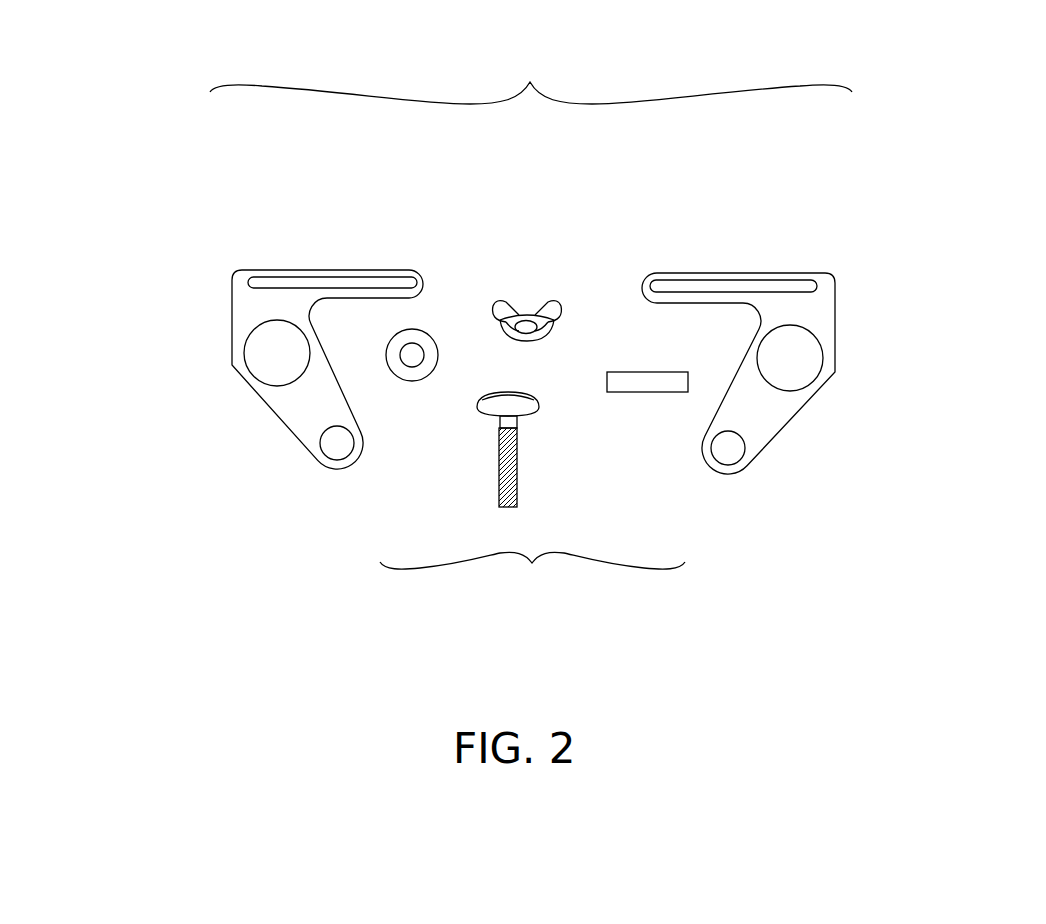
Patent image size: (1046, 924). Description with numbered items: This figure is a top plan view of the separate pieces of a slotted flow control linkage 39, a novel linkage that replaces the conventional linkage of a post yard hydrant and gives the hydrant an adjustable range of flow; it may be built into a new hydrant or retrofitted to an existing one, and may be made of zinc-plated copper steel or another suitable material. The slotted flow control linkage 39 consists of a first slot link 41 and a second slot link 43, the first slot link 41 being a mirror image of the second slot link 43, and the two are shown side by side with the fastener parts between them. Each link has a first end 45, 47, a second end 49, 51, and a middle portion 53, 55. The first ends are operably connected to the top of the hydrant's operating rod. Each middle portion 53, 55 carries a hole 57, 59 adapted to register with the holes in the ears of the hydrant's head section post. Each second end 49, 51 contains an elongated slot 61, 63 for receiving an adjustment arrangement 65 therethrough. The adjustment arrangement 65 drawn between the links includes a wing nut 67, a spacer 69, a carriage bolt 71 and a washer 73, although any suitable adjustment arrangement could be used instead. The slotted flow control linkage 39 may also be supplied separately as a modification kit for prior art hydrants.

The slotted flow control linkage 39 is at (531, 60).
The first slot link 41 is at (268, 410).
The second slot link 43 is at (792, 422).
The first end 45 is at (337, 465).
The first end 47 is at (723, 477).
The second end 49 is at (268, 225).
The second end 51 is at (794, 245).
The middle portion 53 is at (180, 371).
The middle portion 55 is at (855, 363).
The hole 57 is at (271, 361).
The hole 59 is at (790, 359).
The elongated slot 61 is at (391, 285).
The elongated slot 63 is at (706, 288).
The adjustment arrangement 65 is at (532, 590).
The wing nut 67 is at (563, 332).
The spacer 69 is at (648, 372).
The carriage bolt 71 is at (517, 472).
The washer 73 is at (410, 372).